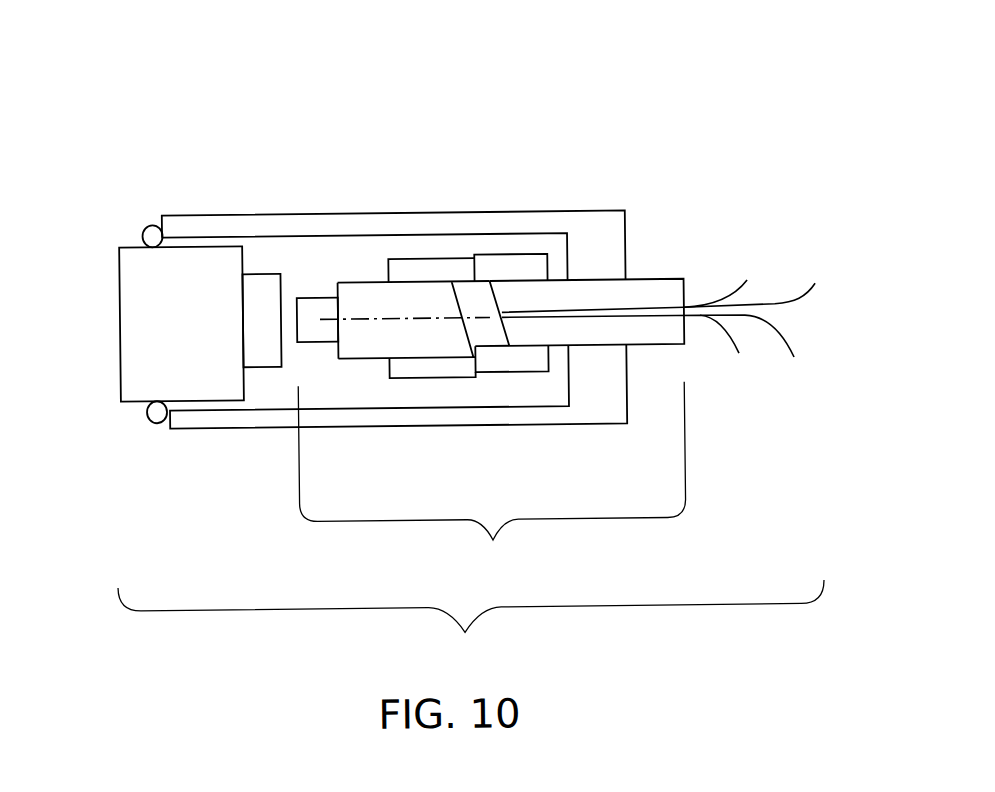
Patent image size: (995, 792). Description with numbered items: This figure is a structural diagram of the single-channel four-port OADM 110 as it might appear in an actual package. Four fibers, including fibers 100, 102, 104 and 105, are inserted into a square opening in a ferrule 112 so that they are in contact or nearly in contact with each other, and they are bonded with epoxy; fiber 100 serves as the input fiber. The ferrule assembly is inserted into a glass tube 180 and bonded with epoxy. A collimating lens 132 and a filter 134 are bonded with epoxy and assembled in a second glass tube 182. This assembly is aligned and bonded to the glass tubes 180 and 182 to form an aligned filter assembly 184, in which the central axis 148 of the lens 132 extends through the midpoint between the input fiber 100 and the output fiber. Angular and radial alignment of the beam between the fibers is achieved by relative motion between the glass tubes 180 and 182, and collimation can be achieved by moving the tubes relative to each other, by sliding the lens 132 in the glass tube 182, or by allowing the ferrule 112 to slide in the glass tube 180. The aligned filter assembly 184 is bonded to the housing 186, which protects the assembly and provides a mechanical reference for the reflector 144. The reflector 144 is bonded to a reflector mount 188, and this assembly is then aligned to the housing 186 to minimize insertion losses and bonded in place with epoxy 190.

The input fiber 100 is at (732, 349).
The fiber 102 is at (730, 302).
The fiber 104 is at (797, 304).
The fiber 105 is at (782, 342).
The single-channel four-port OADM 110 is at (471, 627).
The ferrule 112 is at (642, 282).
The collimating lens 132 is at (352, 282).
The filter 134 is at (300, 341).
The reflector 144 is at (266, 272).
The central axis 148 is at (389, 318).
The glass tube 180 is at (534, 374).
The second glass tube 182 is at (407, 378).
The aligned filter assembly 184 is at (492, 479).
The housing 186 is at (599, 212).
The reflector mount 188 is at (120, 284).
The epoxy 190 is at (149, 420).